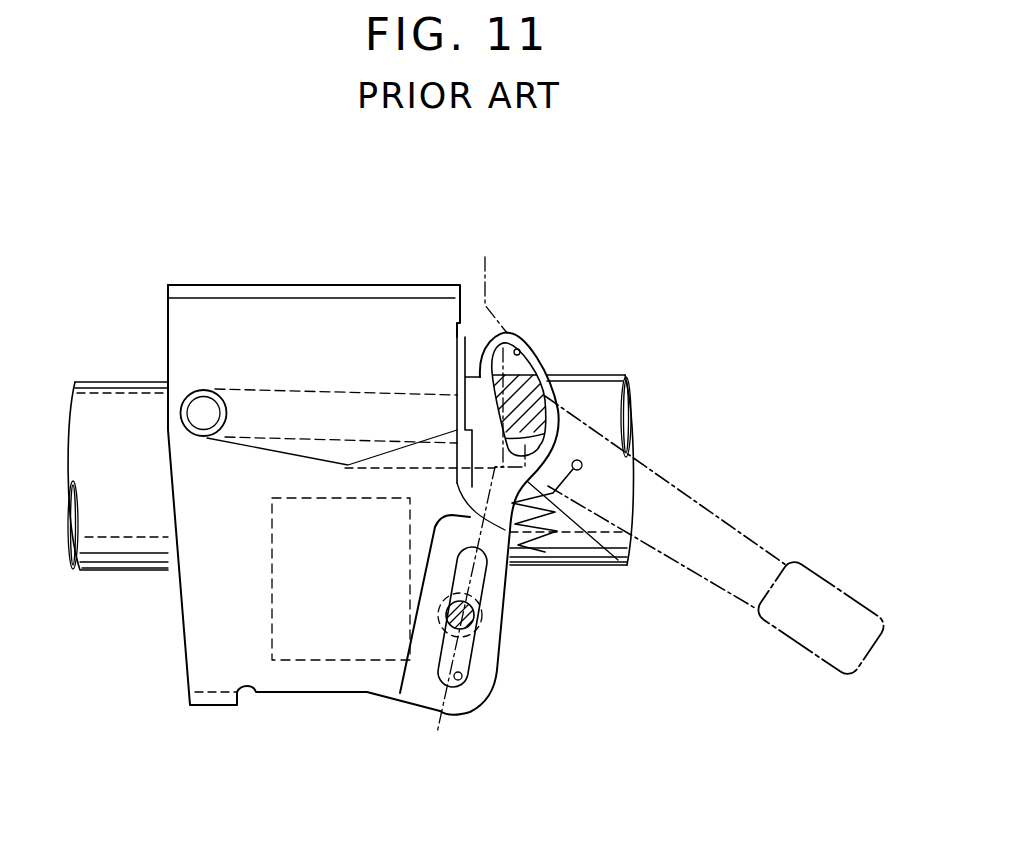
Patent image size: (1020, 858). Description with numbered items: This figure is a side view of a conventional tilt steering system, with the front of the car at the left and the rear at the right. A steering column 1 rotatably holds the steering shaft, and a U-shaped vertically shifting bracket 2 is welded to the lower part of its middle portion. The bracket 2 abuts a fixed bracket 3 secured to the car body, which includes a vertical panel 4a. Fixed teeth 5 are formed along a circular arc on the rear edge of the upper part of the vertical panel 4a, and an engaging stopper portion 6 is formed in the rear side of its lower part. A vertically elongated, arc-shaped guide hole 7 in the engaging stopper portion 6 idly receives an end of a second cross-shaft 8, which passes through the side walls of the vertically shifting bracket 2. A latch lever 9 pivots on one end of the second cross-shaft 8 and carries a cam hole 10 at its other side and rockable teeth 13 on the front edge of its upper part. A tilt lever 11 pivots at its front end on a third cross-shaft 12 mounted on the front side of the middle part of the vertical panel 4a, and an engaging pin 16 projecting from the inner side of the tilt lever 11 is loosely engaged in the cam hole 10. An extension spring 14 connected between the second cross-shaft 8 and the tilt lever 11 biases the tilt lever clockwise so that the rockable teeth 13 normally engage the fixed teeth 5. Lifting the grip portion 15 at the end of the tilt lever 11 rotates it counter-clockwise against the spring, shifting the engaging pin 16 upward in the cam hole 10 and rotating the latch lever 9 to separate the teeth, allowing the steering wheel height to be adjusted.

The steering column 1 is at (138, 545).
The vertically shifting bracket 2 is at (277, 602).
The fixed bracket 3 is at (197, 312).
The vertical panel 4a is at (287, 312).
The teeth 5 is at (457, 333).
The engaging stopper portion 6 is at (417, 692).
The guide holes 7 is at (463, 677).
The second cross-shaft 8 is at (473, 630).
The latch lever 9 is at (537, 518).
The cam hole 10 is at (517, 349).
The tilt lever 11 is at (682, 517).
The third cross-shaft 12 is at (200, 412).
The rockable teeth 13 is at (150, 412).
The extension spring 14 is at (612, 560).
The grip portion 15 is at (815, 643).
The engaging pin 16 is at (540, 393).